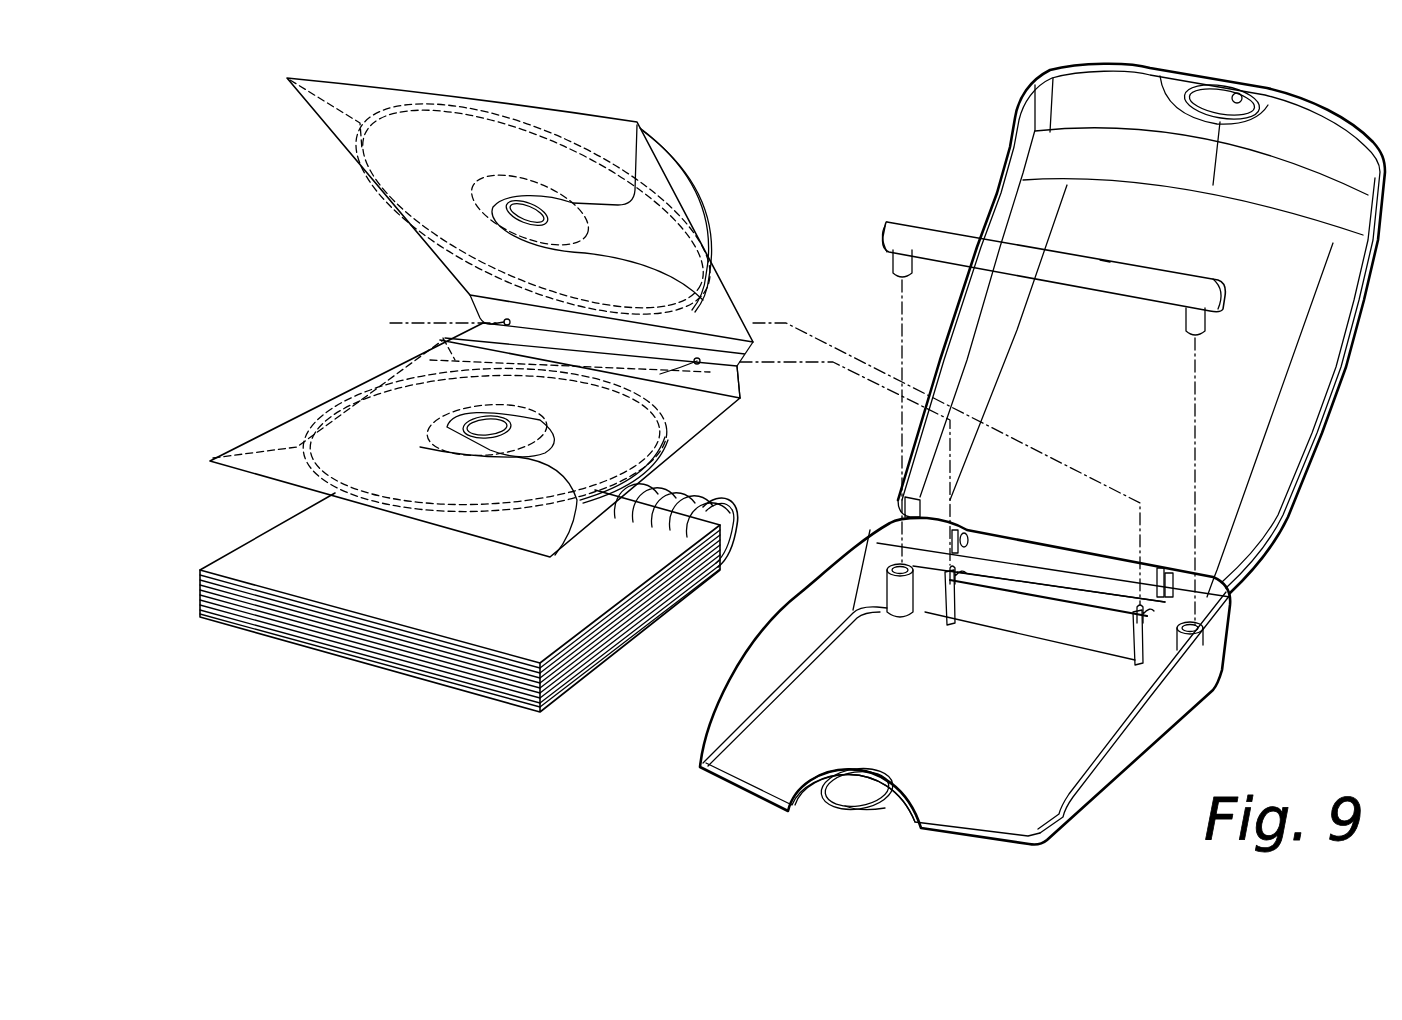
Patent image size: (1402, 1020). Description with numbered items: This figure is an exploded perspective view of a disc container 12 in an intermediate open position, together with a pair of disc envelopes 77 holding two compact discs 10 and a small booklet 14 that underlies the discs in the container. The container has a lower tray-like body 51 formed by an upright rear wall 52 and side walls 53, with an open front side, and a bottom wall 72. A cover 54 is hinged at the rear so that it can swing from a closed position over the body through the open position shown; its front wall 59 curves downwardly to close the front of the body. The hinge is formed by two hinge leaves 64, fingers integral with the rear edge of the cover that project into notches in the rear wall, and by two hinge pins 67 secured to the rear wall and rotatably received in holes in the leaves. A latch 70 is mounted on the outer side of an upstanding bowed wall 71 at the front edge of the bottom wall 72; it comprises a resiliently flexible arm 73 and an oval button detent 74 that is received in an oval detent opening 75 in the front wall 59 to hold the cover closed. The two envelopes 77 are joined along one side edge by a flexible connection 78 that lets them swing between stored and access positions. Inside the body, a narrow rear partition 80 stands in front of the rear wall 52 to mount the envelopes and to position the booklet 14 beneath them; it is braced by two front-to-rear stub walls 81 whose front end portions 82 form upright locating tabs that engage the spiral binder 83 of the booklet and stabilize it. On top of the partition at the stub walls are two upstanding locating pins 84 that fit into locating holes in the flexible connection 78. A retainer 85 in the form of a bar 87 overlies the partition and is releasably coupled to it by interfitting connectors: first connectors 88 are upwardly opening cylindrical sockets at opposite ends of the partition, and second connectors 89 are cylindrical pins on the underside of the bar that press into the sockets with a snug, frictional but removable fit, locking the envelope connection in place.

The compact disc 10 is at (668, 246).
The disc container 12 is at (710, 802).
The booklet 14 is at (260, 655).
The container body 51 is at (708, 716).
The rear wall 52 is at (1043, 538).
The side wall 53 is at (808, 600).
The cover 54 is at (1342, 390).
The front wall 59 is at (1318, 135).
The hinge leaf 64 is at (962, 535).
The hinge pin 67 is at (968, 538).
The latch 70 is at (855, 842).
The bowed wall 71 is at (920, 808).
The bottom wall 72 is at (919, 718).
The flexible arm 73 is at (870, 828).
The detent 74 is at (845, 795).
The detent opening 75 is at (1238, 93).
The envelope 77 is at (600, 140).
The flexible connection 78 is at (730, 383).
The rear partition 80 is at (1025, 622).
The stub wall 81 is at (965, 580).
The front end portion 82 is at (948, 628).
The spiral binder 83 is at (735, 520).
The locating pin 84 is at (947, 586).
The retainer 85 is at (478, 308).
The bar 87 is at (1115, 288).
The first connector 88 is at (888, 608).
The second connector 89 is at (892, 262).